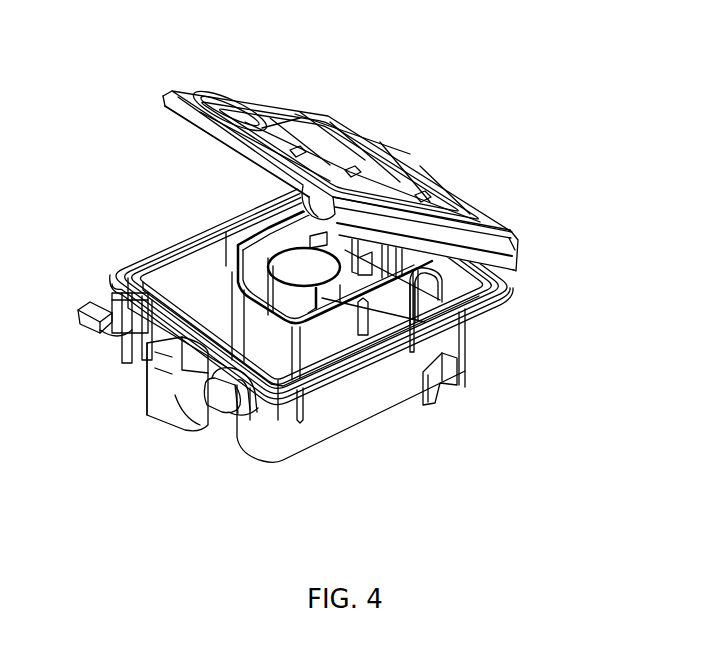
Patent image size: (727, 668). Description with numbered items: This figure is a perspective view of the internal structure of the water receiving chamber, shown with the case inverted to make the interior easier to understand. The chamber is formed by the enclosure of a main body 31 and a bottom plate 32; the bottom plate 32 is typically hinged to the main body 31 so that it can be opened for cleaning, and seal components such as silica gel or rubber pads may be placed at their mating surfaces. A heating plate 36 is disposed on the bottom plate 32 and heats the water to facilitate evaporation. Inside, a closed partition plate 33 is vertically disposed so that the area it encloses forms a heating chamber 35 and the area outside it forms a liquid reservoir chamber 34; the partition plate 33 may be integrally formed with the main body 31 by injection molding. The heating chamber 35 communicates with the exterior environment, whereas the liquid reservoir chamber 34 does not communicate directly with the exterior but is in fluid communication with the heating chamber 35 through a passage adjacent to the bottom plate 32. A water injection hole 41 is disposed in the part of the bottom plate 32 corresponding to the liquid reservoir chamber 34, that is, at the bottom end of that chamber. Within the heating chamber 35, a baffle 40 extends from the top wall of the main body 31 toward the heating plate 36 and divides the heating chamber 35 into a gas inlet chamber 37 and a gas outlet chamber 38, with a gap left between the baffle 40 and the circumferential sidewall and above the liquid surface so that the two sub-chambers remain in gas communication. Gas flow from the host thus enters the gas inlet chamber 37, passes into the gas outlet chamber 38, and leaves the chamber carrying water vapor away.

The main body 31 is at (460, 482).
The bottom plate 32 is at (488, 215).
The partition plate 33 is at (205, 240).
The liquid reservoir chamber 34 is at (187, 283).
The heating chamber 35 is at (274, 243).
The heating plate 36 is at (360, 163).
The gas inlet chamber 37 is at (470, 307).
The gas outlet chamber 38 is at (324, 492).
The baffle 40 is at (547, 400).
The water injection hole 41 is at (203, 92).